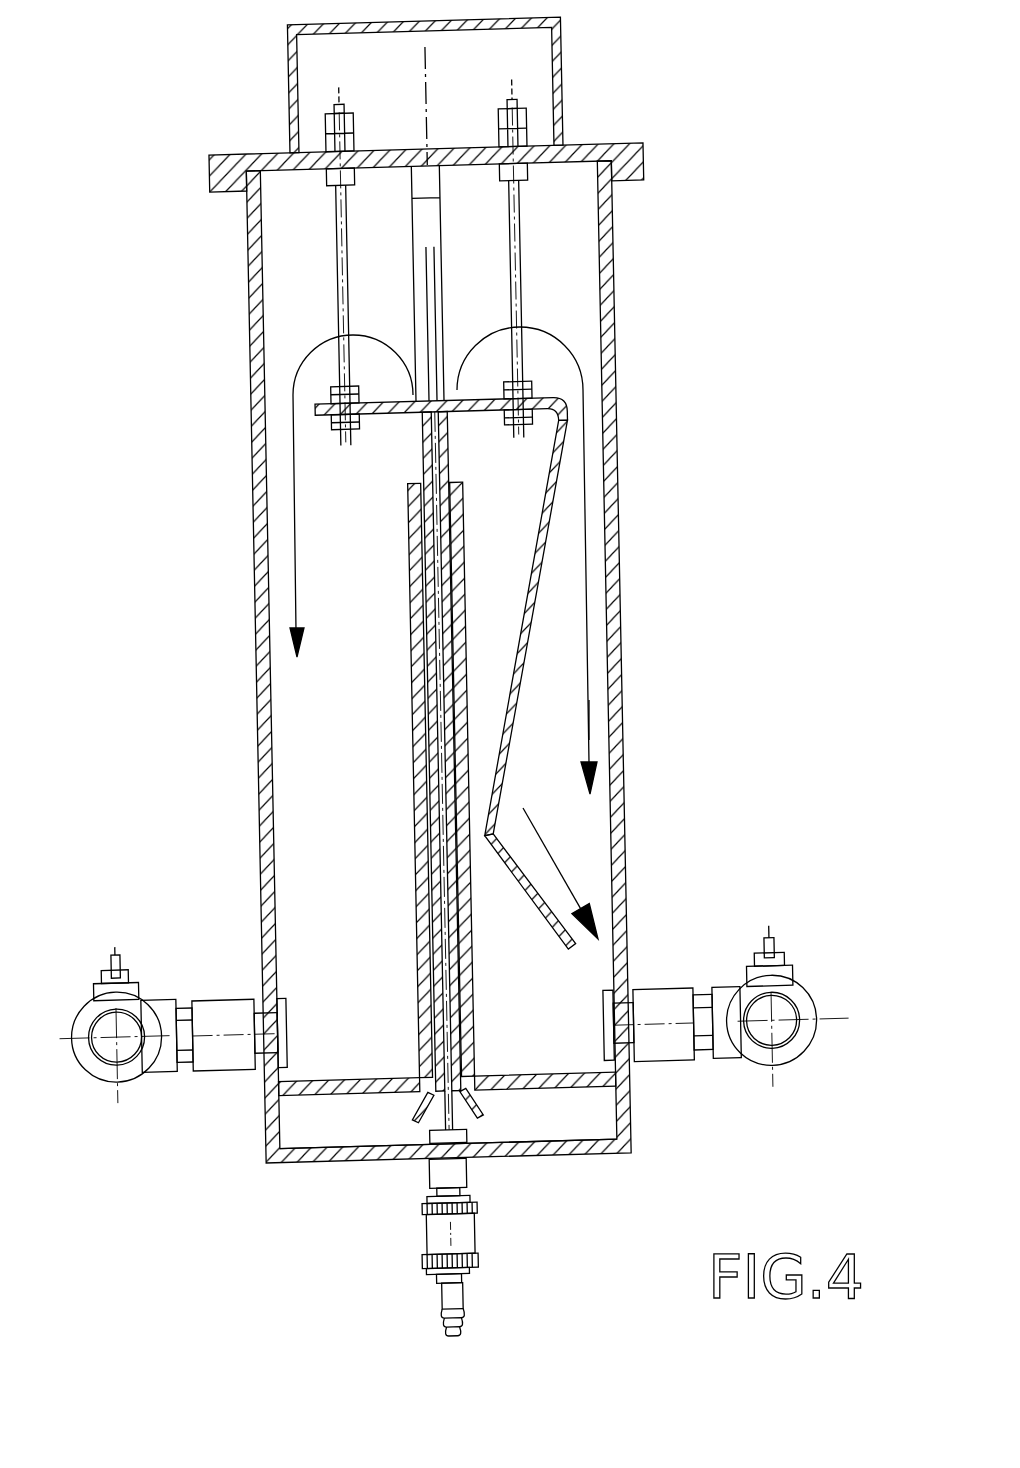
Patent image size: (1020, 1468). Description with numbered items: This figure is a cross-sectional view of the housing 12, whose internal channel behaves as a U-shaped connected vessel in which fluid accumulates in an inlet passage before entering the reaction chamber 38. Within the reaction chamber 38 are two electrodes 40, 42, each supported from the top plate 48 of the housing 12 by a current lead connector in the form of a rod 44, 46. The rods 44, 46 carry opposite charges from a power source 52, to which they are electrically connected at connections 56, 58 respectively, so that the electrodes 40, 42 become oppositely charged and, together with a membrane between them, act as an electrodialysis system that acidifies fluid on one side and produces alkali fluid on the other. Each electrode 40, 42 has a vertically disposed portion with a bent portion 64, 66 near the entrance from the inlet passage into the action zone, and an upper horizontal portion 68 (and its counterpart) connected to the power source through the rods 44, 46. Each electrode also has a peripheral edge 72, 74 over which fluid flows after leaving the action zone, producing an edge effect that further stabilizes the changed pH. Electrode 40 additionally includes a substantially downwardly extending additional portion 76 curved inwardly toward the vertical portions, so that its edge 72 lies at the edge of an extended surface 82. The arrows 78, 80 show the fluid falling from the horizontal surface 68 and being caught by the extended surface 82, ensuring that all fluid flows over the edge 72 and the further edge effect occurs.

The housing 12 is at (228, 376).
The reaction chamber 38 is at (345, 792).
The electrode 40 is at (551, 624).
The electrode 42 is at (399, 431).
The rod 44 is at (523, 283).
The rod 46 is at (338, 294).
The top plate 48 is at (529, 143).
The power source 52 is at (525, 48).
The electrical connection 56 is at (522, 98).
The electrical connection 58 is at (338, 108).
The bent portion 64 is at (475, 1116).
The bent portion 66 is at (409, 1116).
The upper horizontal portion 68 is at (477, 410).
The peripheral edge 72 is at (580, 946).
The peripheral edge 74 is at (296, 564).
The additional portion 76 is at (505, 760).
The arrow 78 is at (590, 700).
The arrow 80 is at (543, 901).
The extended surface 82 is at (559, 923).